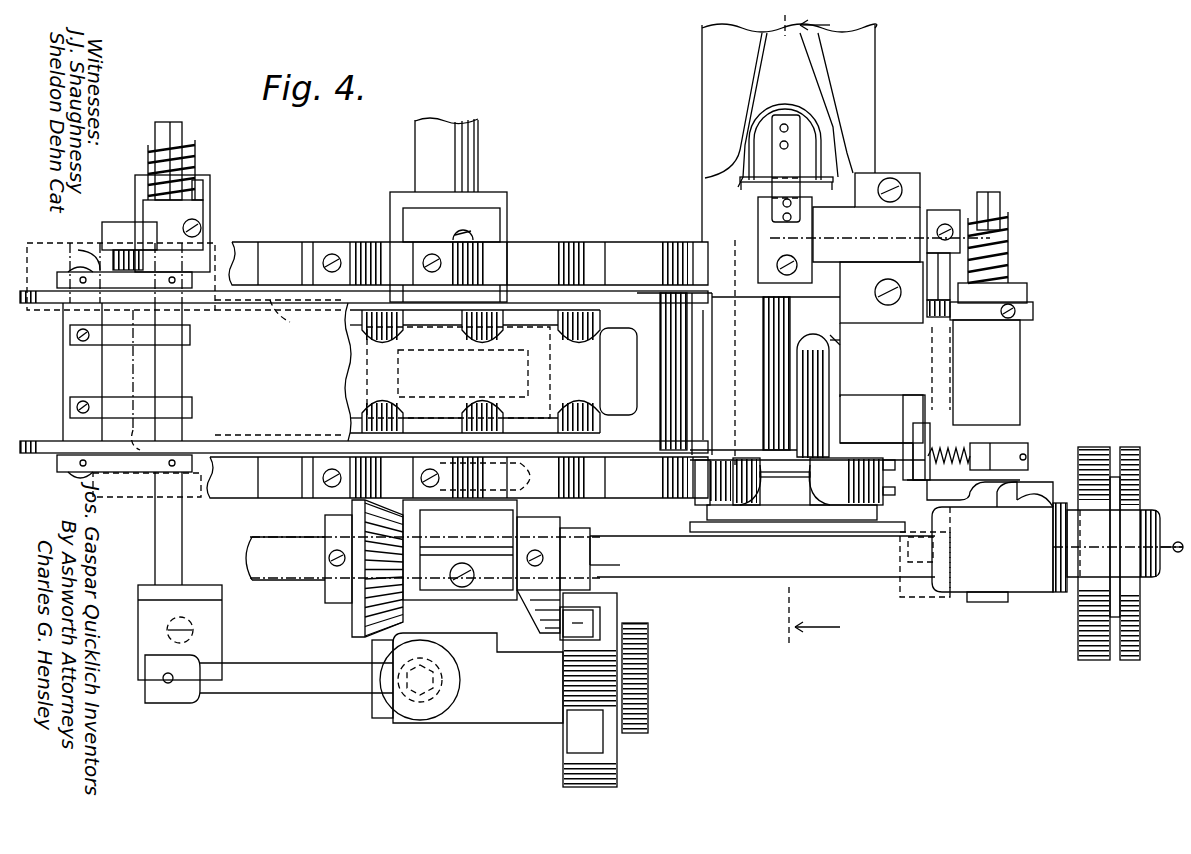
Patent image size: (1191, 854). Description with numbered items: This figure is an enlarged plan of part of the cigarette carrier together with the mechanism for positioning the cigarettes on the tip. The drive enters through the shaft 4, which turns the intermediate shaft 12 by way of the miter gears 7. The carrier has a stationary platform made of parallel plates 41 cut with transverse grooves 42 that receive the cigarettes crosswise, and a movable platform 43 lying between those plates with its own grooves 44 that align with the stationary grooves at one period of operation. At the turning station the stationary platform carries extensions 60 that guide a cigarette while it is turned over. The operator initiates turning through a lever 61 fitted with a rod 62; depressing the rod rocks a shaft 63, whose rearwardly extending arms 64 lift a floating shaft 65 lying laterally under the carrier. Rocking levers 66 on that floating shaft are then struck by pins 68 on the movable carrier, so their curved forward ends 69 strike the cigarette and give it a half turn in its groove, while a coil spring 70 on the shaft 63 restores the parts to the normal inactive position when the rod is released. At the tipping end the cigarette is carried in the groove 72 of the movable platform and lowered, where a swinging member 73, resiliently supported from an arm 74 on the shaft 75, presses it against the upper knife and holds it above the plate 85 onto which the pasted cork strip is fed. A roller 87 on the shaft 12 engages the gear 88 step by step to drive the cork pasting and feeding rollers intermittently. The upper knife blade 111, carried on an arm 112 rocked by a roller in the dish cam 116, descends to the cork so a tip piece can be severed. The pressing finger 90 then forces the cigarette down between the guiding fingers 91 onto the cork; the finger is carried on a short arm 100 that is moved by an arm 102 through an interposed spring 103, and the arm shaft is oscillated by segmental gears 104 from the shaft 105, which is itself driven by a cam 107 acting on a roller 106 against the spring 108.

The shaft 4 is at (478, 183).
The miter gears 7 is at (405, 598).
The intermediate shaft 12 is at (280, 572).
The parallel plates 41 is at (637, 250).
The transverse grooves 42 is at (590, 252).
The platform 43 is at (635, 352).
The grooves 44 is at (583, 407).
The extensions 60 is at (425, 245).
The lever 61 is at (297, 675).
The rod 62 is at (192, 336).
The shaft 63 is at (182, 136).
The rearwardly extending arms 64 is at (110, 470).
The floating shaft 65 is at (111, 364).
The rocking arms or levers 66 is at (270, 302).
The pins 68 is at (126, 380).
The other end of levers 69 is at (343, 440).
The coil spring 70 is at (190, 162).
The groove 72 is at (822, 330).
The swinging member 73 is at (800, 150).
The arm 74 is at (792, 165).
The shaft 75 is at (752, 232).
The plate 85 is at (775, 505).
The roller 87 is at (598, 617).
The gear 88 is at (577, 688).
The pressing finger 90 is at (815, 378).
The guiding fingers 91 is at (770, 510).
The short arm 100 is at (898, 415).
The arm 102 is at (985, 460).
The spring 103 is at (958, 448).
The segmental gears 104 is at (955, 327).
The shaft 105 is at (1003, 207).
The roller 106 is at (1067, 592).
The cam 107 is at (1080, 462).
The spring 108 is at (1010, 248).
The upper knife blade 111 is at (822, 525).
The arm 112 is at (955, 585).
The dish cam 116 is at (1137, 471).